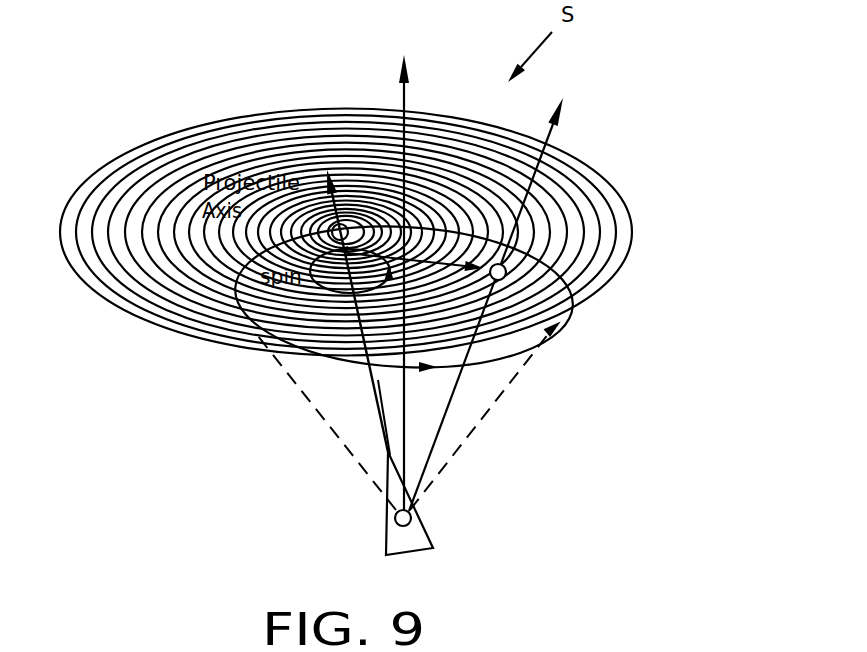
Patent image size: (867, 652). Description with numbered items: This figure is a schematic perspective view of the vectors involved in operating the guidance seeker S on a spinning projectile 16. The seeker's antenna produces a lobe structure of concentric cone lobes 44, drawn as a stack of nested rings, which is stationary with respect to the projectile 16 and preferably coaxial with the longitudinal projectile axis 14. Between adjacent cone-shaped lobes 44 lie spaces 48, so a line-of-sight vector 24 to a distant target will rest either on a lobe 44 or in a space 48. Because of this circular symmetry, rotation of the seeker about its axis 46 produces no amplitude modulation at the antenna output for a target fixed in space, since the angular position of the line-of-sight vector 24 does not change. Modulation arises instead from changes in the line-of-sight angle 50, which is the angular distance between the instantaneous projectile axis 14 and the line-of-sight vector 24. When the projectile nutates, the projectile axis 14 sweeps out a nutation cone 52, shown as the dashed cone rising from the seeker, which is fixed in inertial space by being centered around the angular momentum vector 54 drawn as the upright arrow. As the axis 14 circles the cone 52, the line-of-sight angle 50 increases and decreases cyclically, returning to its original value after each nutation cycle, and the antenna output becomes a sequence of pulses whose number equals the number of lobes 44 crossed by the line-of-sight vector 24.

The longitudinal axis of the projectile 14 is at (377, 416).
The projectile 16 is at (397, 537).
The line-of-sight vector 24 is at (553, 120).
The concentric cone lobes 44 is at (633, 223).
The axis of the guidance seeker 46 is at (382, 437).
The space between lobes 48 is at (605, 250).
The line-of-sight angle 50 is at (383, 228).
The nutation cone 52 is at (280, 368).
The angular momentum vector 54 is at (408, 95).